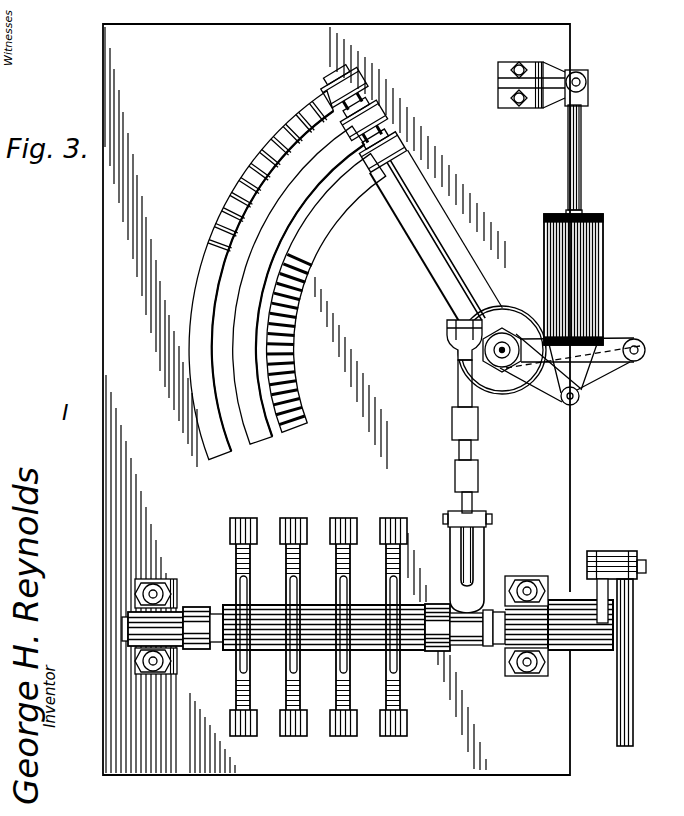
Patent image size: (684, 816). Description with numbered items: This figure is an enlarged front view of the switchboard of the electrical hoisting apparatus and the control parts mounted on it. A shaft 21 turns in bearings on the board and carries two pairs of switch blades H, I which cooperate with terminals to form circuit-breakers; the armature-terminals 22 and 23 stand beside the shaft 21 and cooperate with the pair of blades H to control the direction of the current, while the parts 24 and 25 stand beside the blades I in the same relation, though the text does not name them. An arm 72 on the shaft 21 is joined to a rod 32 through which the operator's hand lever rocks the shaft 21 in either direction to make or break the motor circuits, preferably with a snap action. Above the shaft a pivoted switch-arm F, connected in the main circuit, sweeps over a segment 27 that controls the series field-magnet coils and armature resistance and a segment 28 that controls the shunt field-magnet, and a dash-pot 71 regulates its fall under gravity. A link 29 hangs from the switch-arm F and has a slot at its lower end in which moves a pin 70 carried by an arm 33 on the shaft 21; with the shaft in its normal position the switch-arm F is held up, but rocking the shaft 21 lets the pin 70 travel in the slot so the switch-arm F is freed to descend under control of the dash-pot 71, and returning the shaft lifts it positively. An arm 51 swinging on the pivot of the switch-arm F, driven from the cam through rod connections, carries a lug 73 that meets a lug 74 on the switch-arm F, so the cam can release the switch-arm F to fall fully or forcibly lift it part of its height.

The shaft 21 is at (120, 629).
The armature-terminals 22 is at (276, 511).
The armature-terminals 23 is at (257, 736).
The cam disc 24 is at (376, 511).
The cam disc 25 is at (357, 736).
The segment 27 is at (270, 156).
The segment 28 is at (297, 349).
The link 29 is at (478, 468).
The rod 32 is at (632, 670).
The arm 33 is at (483, 561).
The arm 51 is at (612, 359).
The pin 70 is at (491, 520).
The dash-pot 71 is at (604, 290).
The arm 72 is at (600, 553).
The lug 73 is at (514, 337).
The lug 74 is at (521, 386).
The switch-arm F is at (437, 262).
The switch blades H is at (289, 591).
The switch blades I is at (389, 591).